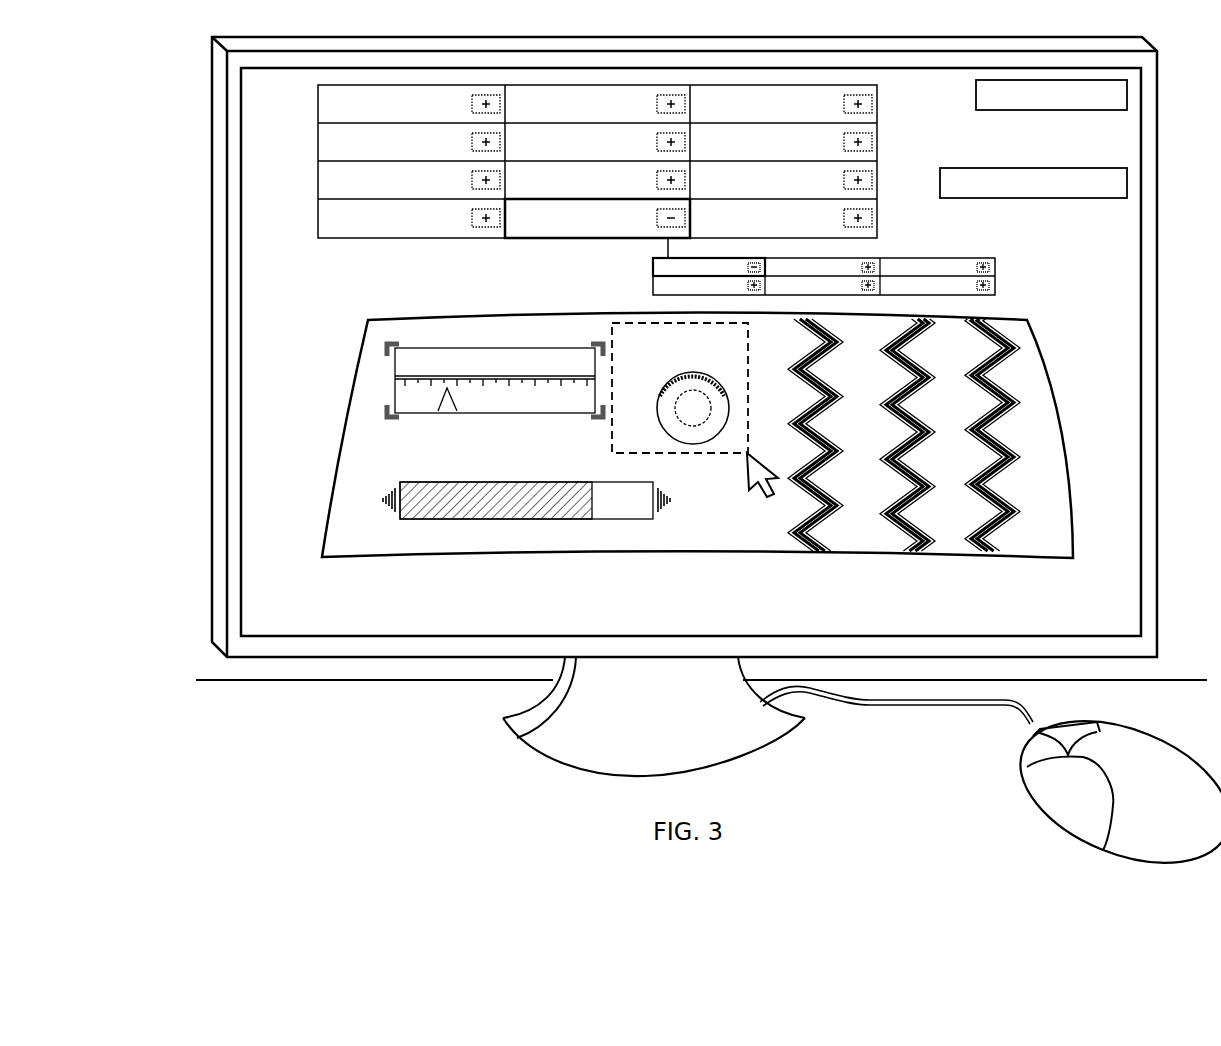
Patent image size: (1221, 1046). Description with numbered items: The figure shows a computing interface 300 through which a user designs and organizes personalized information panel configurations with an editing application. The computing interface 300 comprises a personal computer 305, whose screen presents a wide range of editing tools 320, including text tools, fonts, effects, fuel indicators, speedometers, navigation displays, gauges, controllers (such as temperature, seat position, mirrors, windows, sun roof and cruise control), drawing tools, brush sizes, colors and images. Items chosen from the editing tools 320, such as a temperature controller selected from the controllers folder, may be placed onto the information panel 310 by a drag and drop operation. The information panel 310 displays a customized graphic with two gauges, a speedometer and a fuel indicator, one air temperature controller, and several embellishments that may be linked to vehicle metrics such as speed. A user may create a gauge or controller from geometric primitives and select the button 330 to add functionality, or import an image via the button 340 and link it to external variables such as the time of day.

The computing interface 300 is at (287, 774).
The personal computer 305 is at (208, 340).
The information panel 310 is at (350, 378).
The editing tools 320 is at (318, 184).
The button to add functionality 330 is at (1046, 200).
The button to import an image 340 is at (1066, 112).